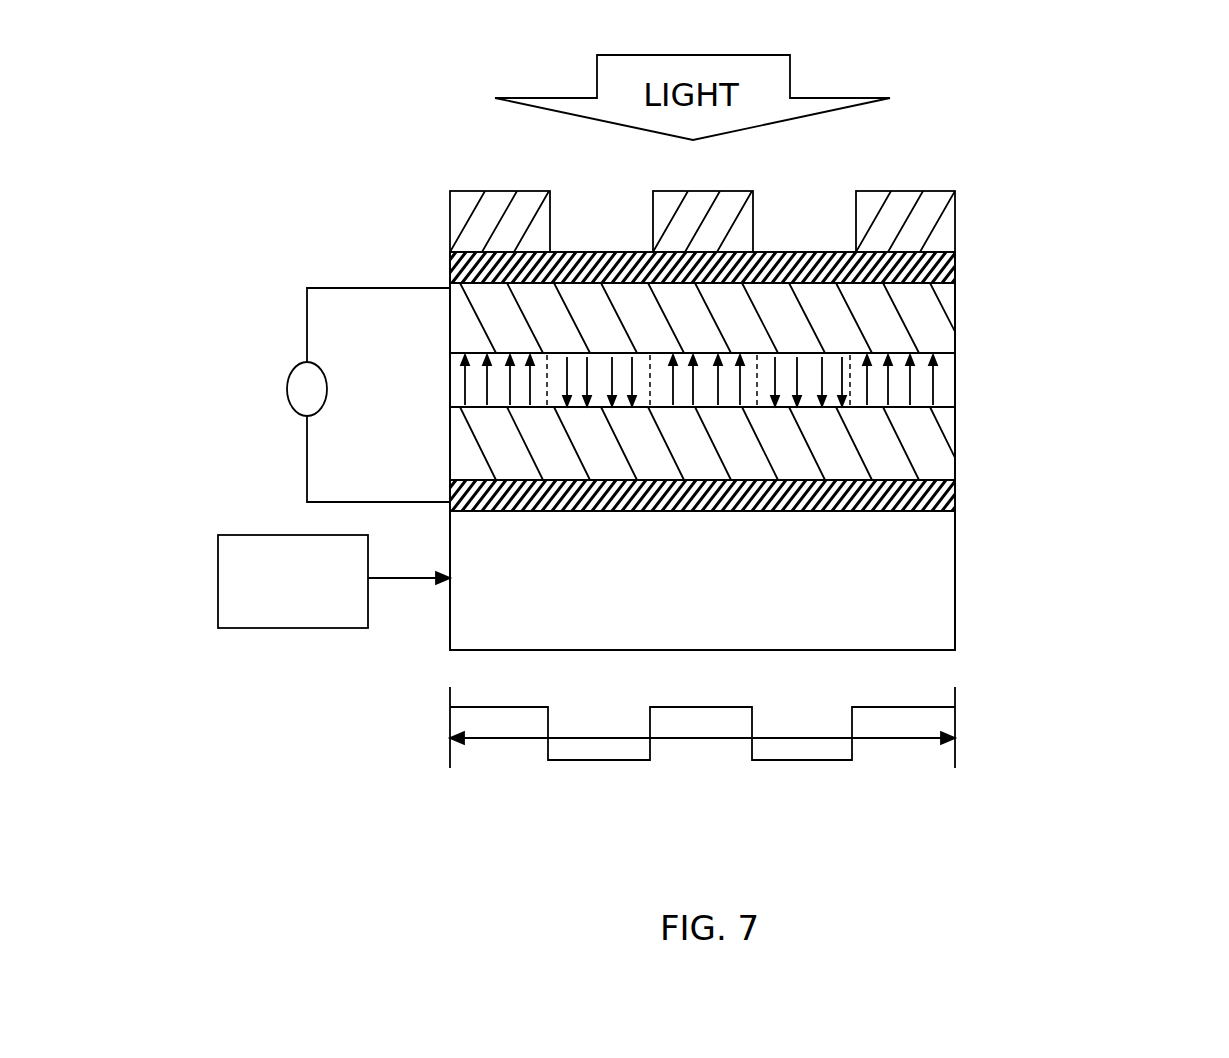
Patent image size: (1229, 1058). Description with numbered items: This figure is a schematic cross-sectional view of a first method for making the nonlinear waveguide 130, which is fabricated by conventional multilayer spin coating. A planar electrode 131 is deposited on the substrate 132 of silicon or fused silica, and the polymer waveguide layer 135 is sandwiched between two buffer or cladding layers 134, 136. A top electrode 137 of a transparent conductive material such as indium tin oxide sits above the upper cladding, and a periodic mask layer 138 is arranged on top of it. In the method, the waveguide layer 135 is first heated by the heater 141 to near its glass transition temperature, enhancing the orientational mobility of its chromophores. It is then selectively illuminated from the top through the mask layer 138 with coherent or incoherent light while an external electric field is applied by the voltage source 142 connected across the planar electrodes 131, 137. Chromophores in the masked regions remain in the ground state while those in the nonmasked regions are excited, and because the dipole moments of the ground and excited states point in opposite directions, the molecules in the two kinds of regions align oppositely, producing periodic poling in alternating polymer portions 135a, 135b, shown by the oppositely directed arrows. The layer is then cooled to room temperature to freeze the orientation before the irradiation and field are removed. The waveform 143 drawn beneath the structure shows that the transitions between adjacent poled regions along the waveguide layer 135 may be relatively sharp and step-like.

The nonlinear waveguide 130 is at (993, 205).
The planar electrode 131 is at (955, 497).
The substrate 132 is at (893, 602).
The buffer or cladding layer 134 is at (955, 435).
The waveguide layer 135 is at (958, 366).
The polymer portion 135a is at (490, 378).
The polymer portion 135b is at (702, 388).
The buffer or cladding layer 136 is at (955, 318).
The top electrode 137 is at (955, 260).
The periodic mask layer 138 is at (653, 197).
The heater 141 is at (322, 563).
The voltage source 142 is at (290, 392).
The waveform 143 is at (648, 752).